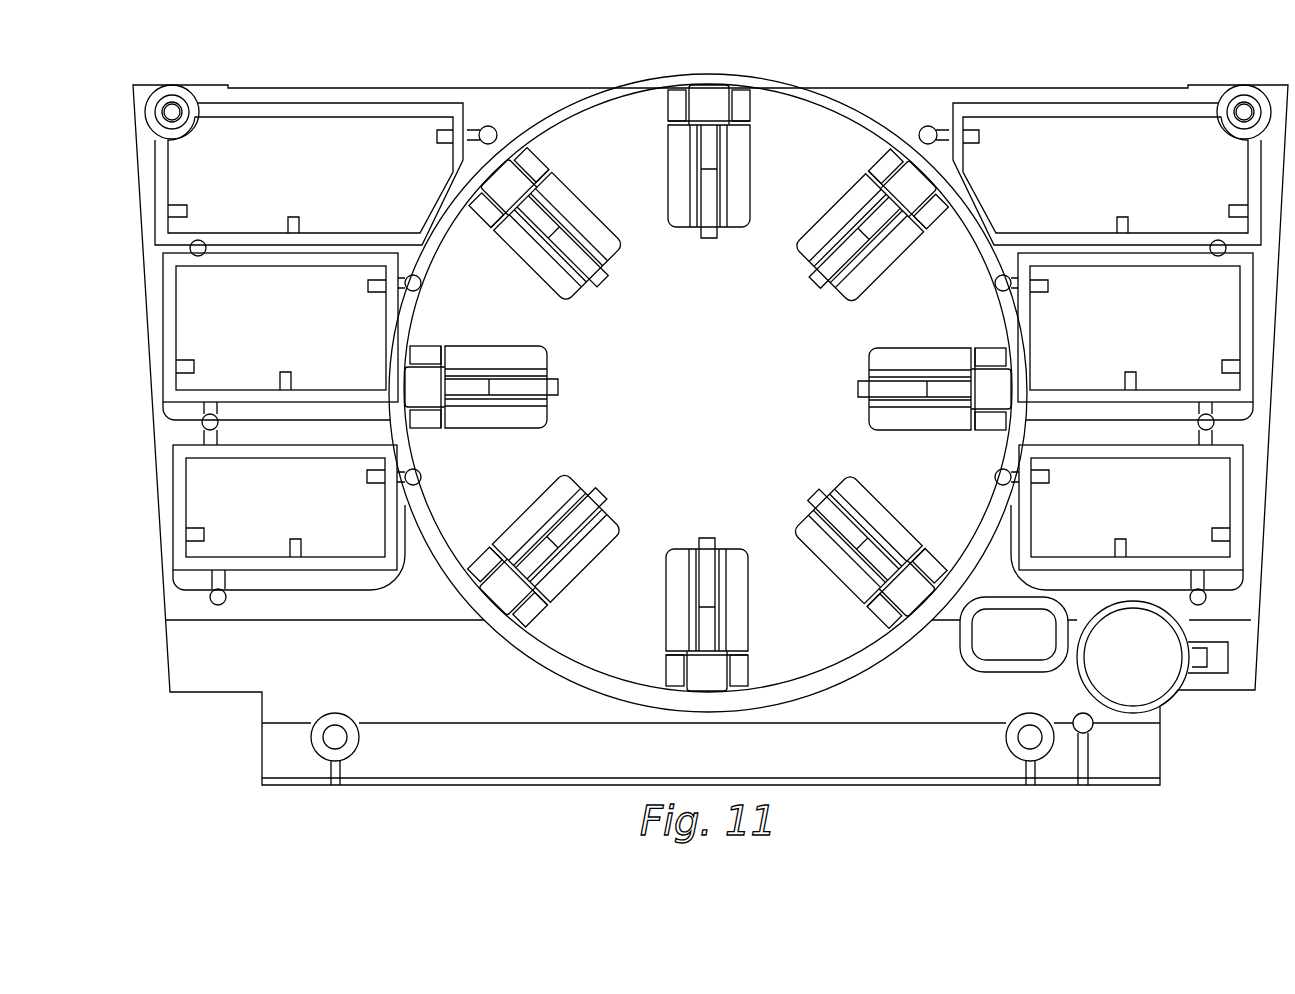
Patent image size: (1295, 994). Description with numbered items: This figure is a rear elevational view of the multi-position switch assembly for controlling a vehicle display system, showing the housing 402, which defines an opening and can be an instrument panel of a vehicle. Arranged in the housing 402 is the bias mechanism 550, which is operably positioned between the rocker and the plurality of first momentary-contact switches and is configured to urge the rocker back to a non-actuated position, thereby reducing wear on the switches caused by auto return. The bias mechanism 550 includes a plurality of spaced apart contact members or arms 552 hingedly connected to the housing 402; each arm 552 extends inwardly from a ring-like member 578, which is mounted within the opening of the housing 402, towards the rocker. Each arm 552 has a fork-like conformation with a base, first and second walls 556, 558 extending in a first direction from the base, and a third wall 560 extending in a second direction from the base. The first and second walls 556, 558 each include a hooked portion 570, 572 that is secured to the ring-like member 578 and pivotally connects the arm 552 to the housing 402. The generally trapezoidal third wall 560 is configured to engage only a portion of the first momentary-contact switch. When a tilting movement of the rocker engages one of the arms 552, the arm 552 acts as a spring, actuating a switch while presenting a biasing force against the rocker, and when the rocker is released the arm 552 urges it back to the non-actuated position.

The housing 402 is at (1100, 88).
The bias mechanism 550 is at (708, 379).
The arm 552 is at (708, 388).
The first wall 556 is at (678, 587).
The second wall 558 is at (737, 585).
The third wall 560 is at (507, 587).
The hooked portion 570 is at (675, 673).
The hooked portion 572 is at (742, 673).
The ring-like member 578 is at (556, 667).